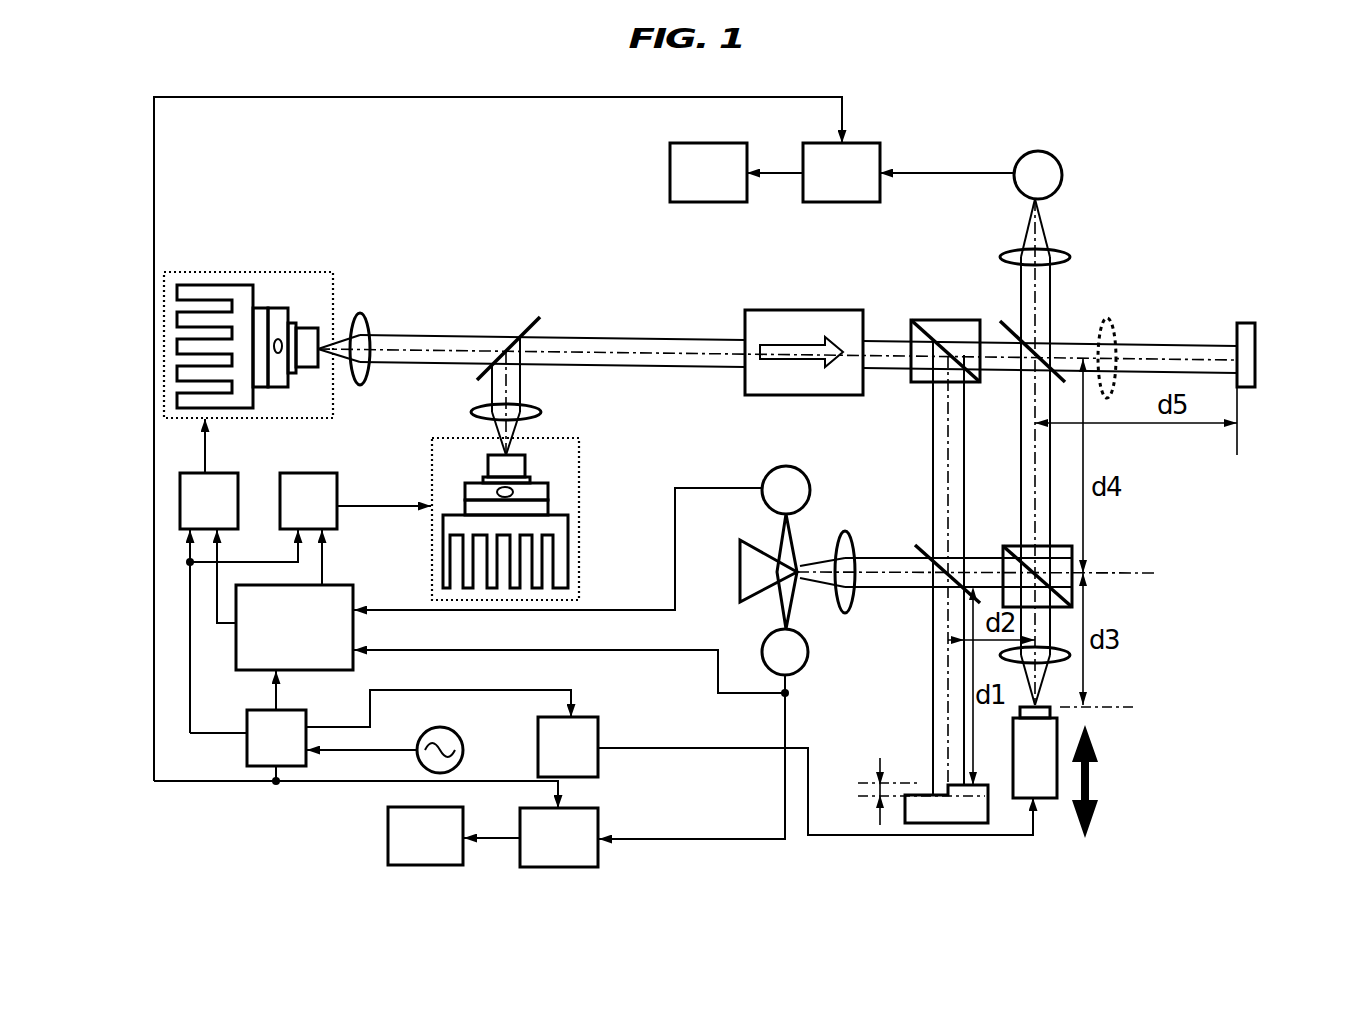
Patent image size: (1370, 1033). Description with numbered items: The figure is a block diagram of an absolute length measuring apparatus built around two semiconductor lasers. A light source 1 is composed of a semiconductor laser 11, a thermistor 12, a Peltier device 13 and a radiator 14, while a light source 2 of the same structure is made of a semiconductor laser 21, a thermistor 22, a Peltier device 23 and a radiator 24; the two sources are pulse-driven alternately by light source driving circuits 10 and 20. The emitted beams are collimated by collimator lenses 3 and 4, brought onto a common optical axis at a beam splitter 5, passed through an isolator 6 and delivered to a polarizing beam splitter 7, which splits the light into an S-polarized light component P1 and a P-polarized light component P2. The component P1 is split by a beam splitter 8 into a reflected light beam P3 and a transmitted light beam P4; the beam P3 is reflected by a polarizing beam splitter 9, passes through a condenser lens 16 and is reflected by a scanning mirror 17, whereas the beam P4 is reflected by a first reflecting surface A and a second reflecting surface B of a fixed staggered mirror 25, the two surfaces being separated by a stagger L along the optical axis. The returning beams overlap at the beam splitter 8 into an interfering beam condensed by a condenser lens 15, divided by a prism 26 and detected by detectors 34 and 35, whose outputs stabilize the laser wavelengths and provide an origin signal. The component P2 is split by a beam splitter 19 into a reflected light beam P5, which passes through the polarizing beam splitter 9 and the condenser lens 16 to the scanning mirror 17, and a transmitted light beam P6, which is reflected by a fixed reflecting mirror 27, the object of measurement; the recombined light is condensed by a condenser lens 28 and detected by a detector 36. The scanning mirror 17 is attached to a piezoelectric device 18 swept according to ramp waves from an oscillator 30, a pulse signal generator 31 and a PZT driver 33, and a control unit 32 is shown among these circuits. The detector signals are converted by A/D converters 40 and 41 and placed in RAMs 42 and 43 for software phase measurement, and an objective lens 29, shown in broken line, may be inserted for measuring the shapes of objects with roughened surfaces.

The light source 1 is at (333, 273).
The light source 2 is at (580, 438).
The collimator lens 3 is at (360, 313).
The collimator lens 4 is at (538, 412).
The beam splitter 5 is at (533, 320).
The isolator 6 is at (773, 310).
The polarizing beam splitter 7 is at (935, 323).
The beam splitter 8 is at (932, 543).
The polarizing beam splitter 9 is at (1017, 547).
The light source driving circuit 10 is at (218, 473).
The semiconductor laser 11 is at (315, 328).
The thermistor 12 is at (277, 323).
The Peltier device 13 is at (257, 307).
The radiator 14 is at (205, 292).
The condenser lens 15 is at (845, 533).
The condenser lens 16 is at (1065, 653).
The scanning mirror 17 is at (1055, 713).
The piezoelectric device 18 is at (1047, 800).
The beam splitter 19 is at (1010, 327).
The light source driving circuit 20 is at (340, 520).
The semiconductor laser 21 is at (530, 460).
The thermistor 22 is at (550, 490).
The Peltier device 23 is at (530, 508).
The radiator 24 is at (577, 562).
The staggered mirror 25 is at (972, 823).
The prism 26 is at (733, 573).
The reflecting mirror 27 is at (1255, 388).
The condenser lens 28 is at (1057, 257).
The objective lens 29 is at (1103, 317).
The oscillator 30 is at (470, 755).
The pulse signal generator 31 is at (237, 762).
The control unit 32 is at (225, 639).
The PZT driver 33 is at (600, 775).
The detector 34 is at (810, 652).
The detector 35 is at (773, 467).
The detector 36 is at (1062, 163).
The A/D converter 40 is at (607, 862).
The A/D converter 41 is at (887, 148).
The RAM 42 is at (380, 857).
The RAM 43 is at (668, 190).
The S-polarized light component P1 is at (920, 410).
The P-polarized light component P2 is at (1000, 365).
The reflected light beam P3 is at (978, 553).
The transmitted light beam P4 is at (927, 650).
The reflected light beam P5 is at (1052, 468).
The transmitted light beam P6 is at (1155, 353).
The first reflecting surface A is at (975, 778).
The second reflecting surface B is at (937, 790).
The stagger L is at (870, 788).